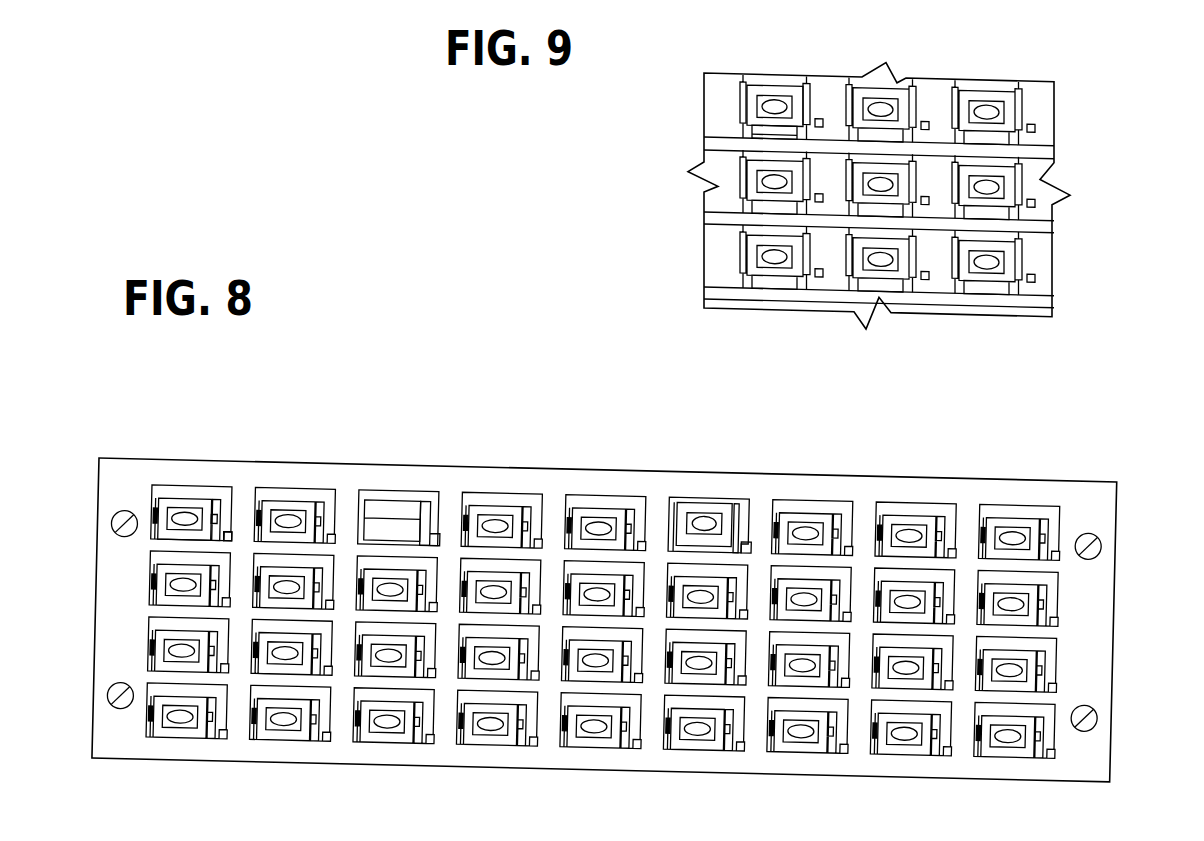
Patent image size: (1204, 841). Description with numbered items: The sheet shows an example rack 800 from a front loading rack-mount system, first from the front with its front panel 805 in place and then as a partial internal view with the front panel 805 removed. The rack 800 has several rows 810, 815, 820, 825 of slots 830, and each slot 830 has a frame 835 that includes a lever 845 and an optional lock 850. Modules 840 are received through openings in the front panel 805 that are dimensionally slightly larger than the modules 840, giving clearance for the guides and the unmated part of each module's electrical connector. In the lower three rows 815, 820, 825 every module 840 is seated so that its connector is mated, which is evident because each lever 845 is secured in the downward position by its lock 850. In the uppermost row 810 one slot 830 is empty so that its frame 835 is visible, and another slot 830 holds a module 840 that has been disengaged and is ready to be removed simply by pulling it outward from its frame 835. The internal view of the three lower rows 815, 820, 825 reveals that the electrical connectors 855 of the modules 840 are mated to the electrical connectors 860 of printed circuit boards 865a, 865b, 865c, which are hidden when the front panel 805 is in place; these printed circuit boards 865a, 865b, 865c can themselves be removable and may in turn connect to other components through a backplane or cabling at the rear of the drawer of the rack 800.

In FIG. 8, the rack 800 is at (625, 544).
In FIG. 8, the front panel 805 is at (968, 497).
In FIG. 8, the uppermost row 810 is at (630, 433).
In FIG. 8, the row 815 is at (1067, 597).
In FIG. 9, the row 815 is at (895, 82).
In FIG. 8, the row 820 is at (1067, 665).
In FIG. 9, the row 820 is at (1068, 187).
In FIG. 8, the row 825 is at (1067, 732).
In FIG. 9, the row 825 is at (1063, 263).
In FIG. 8, the slot 830 is at (178, 487).
In FIG. 8, the frame 835 is at (218, 500).
In FIG. 8, the module 840 is at (187, 505).
In FIG. 9, the module 840 is at (773, 90).
In FIG. 8, the lever 845 is at (236, 529).
In FIG. 8, the lock 850 is at (231, 530).
In FIG. 9, the electrical connector 855 is at (785, 127).
In FIG. 9, the electrical connector 860 is at (760, 135).
In FIG. 9, the printed circuit board 865a is at (715, 142).
In FIG. 9, the printed circuit board 865b is at (710, 217).
In FIG. 9, the printed circuit board 865c is at (710, 290).